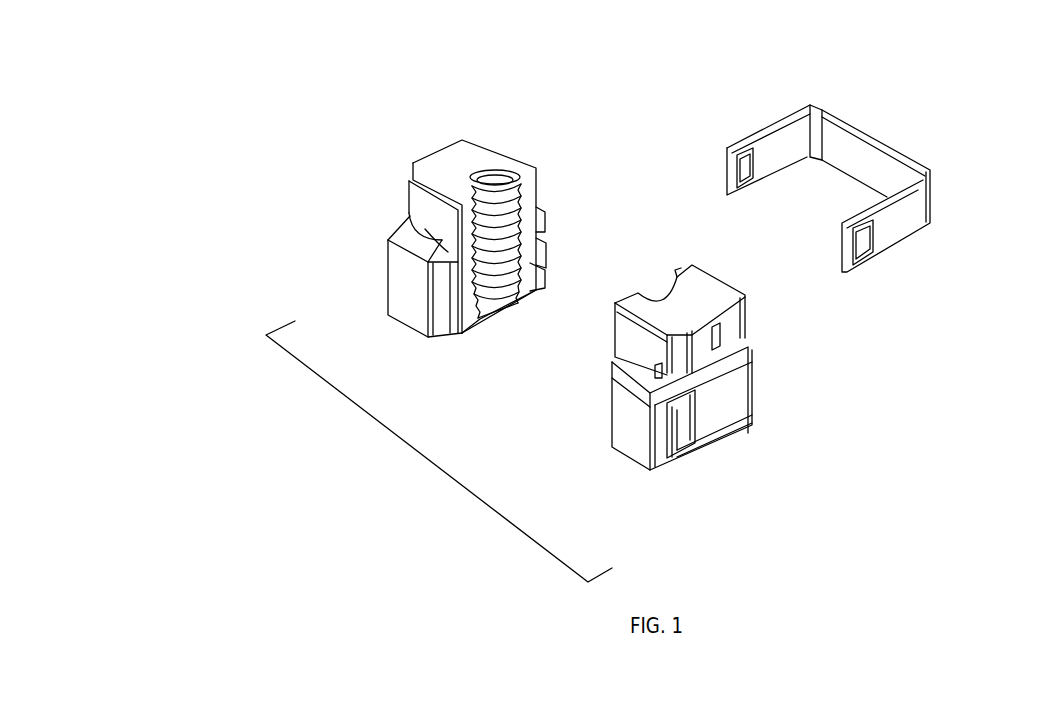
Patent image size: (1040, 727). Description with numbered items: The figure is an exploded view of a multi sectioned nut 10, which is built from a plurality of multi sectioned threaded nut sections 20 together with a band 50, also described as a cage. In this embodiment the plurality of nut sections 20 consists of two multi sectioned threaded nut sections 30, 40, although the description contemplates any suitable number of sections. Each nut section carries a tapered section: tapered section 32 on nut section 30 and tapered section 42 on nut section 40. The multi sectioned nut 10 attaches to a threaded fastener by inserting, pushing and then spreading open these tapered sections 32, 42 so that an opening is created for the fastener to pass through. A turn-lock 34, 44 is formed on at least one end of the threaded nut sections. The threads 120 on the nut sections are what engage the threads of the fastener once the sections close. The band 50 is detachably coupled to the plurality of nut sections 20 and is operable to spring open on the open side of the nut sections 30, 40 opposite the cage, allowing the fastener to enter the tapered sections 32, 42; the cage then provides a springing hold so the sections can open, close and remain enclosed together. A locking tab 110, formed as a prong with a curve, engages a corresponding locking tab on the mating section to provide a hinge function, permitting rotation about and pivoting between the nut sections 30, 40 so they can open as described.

The multi sectioned nut 10 is at (181, 310).
The plurality of multi sectioned threaded nut sections 20 is at (423, 460).
The multi sectioned threaded nut section 30 is at (686, 307).
The tapered section 32 is at (610, 445).
The turn-lock 34 is at (716, 333).
The multi sectioned threaded nut section 40 is at (457, 158).
The tapered section 42 is at (441, 326).
The turn-lock 44 is at (413, 206).
The band 50 is at (905, 218).
The locking tab 110 is at (546, 262).
The threads 120 is at (492, 293).